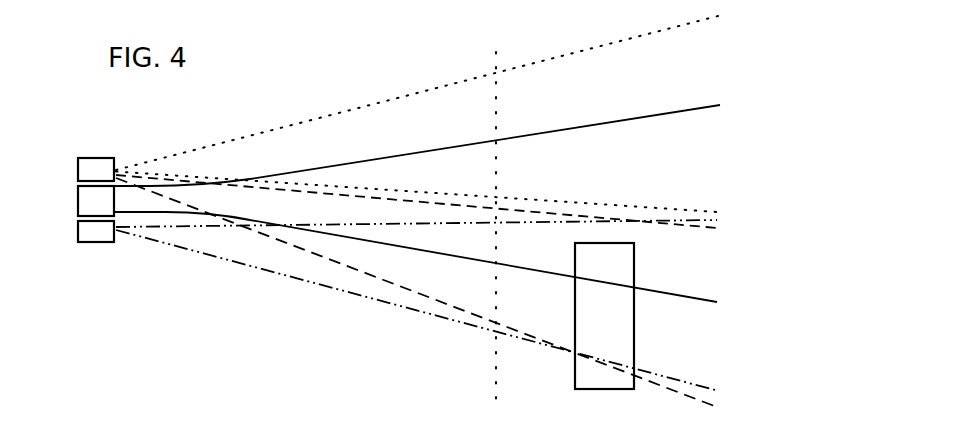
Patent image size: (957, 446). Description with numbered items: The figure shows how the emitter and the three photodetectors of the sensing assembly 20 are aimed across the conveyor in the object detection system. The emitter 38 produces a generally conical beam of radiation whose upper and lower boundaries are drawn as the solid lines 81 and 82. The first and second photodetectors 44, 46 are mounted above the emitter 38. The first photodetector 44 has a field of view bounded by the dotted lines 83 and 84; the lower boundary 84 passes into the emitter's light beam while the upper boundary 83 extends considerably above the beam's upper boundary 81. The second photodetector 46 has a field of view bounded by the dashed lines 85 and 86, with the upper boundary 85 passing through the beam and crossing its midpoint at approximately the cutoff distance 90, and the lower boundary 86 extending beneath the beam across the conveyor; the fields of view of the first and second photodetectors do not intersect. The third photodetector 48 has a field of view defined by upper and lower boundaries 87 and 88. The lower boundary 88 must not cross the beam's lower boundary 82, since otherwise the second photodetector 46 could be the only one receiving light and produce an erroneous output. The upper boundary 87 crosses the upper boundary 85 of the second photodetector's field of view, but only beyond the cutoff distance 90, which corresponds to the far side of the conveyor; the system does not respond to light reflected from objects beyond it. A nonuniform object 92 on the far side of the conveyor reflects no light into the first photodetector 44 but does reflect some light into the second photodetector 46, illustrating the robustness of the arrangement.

The sensing assembly 20 is at (85, 207).
The emitter 38 is at (78, 198).
The first photodetector 44 is at (87, 158).
The second photodetector 46 is at (100, 158).
The third photodetector 48 is at (78, 232).
The upper boundary of emitter beam 81 is at (697, 107).
The lower boundary of emitter beam 82 is at (657, 297).
The upper boundary of first photodetector field of view 83 is at (615, 45).
The lower boundary of first photodetector field of view 84 is at (643, 207).
The upper boundary of second photodetector field of view 85 is at (508, 210).
The lower boundary of second photodetector field of view 86 is at (402, 290).
The upper boundary of third photodetector field of view 87 is at (480, 222).
The lower boundary of third photodetector field of view 88 is at (647, 373).
The cutoff distance 90 is at (495, 395).
The nonuniform object 92 is at (635, 265).